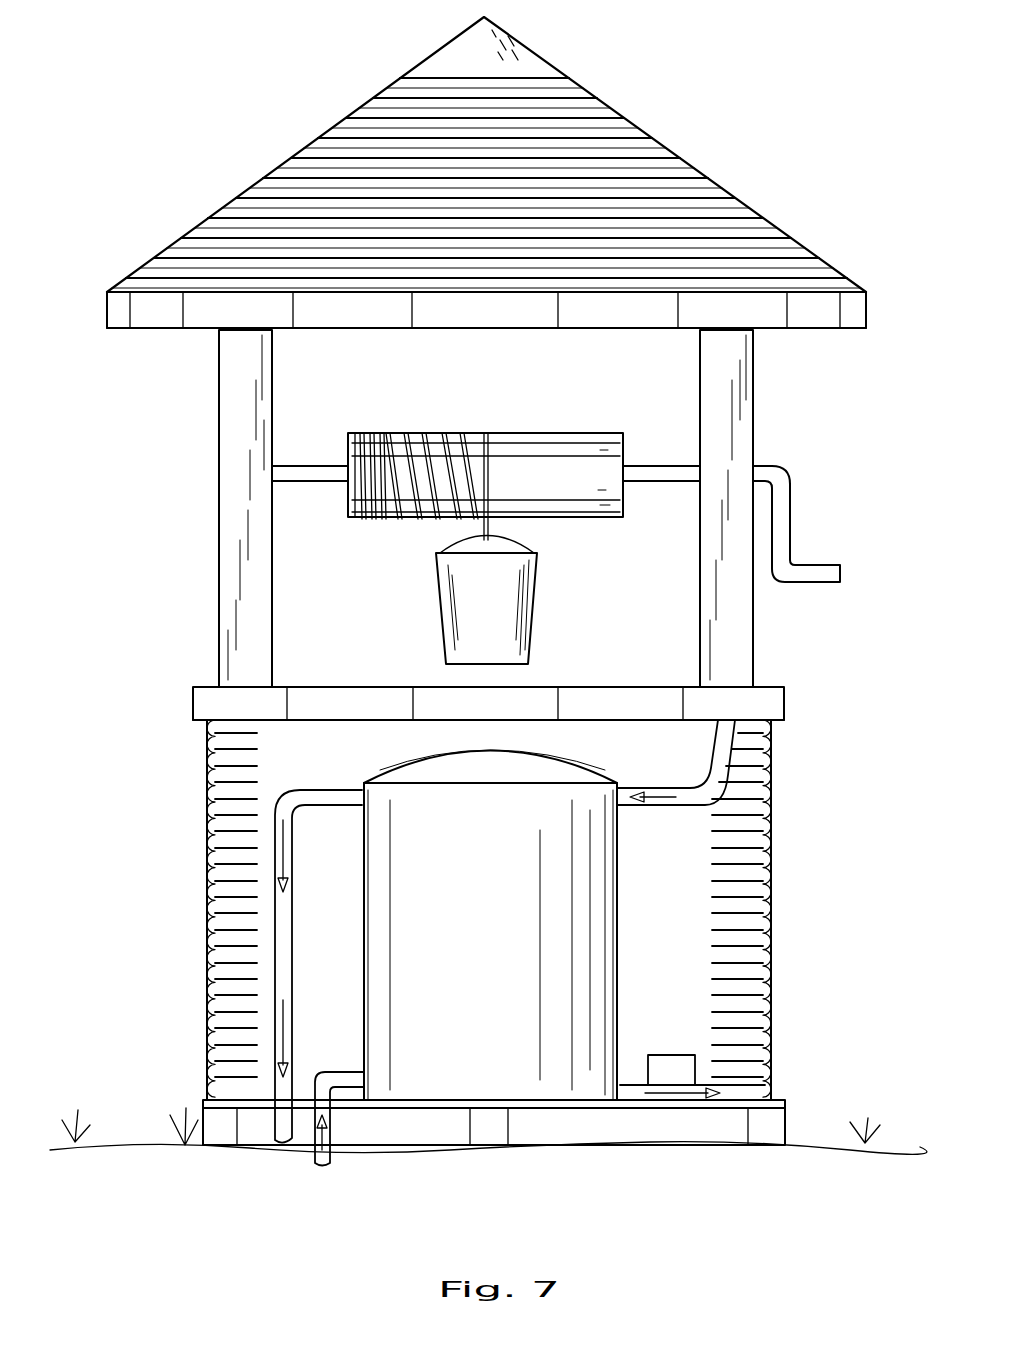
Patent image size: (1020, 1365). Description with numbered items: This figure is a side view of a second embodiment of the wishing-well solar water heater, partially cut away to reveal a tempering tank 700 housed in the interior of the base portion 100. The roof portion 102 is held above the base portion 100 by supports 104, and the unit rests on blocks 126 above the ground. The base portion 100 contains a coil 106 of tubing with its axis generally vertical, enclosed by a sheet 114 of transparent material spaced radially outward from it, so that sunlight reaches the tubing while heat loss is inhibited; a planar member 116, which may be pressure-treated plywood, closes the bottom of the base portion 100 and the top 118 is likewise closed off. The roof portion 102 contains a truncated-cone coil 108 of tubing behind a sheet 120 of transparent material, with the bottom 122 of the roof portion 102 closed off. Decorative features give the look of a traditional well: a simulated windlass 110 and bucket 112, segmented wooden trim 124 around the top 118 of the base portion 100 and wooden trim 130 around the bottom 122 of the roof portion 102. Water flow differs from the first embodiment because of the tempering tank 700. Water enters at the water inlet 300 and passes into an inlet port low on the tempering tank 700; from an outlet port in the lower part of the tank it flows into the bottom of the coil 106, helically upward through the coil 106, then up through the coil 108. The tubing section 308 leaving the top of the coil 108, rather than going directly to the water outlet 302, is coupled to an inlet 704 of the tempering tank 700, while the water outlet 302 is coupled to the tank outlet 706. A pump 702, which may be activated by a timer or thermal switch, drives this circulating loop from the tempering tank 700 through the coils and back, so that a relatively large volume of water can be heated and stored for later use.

The base portion 100 is at (168, 855).
The roof portion 102 is at (348, 80).
The supports 104 is at (232, 398).
The coil 106 is at (745, 838).
The coil 108 is at (655, 152).
The windlass 110 is at (662, 472).
The bucket 112 is at (505, 598).
The sheet of transparent material 114 is at (207, 770).
The planar member 116 is at (773, 1100).
The top of base portion 118 is at (552, 668).
The sheet of transparent material 120 is at (535, 50).
The bottom of roof portion 122 is at (581, 346).
The wooden trim 124 is at (323, 705).
The blocks 126 is at (762, 1122).
The wooden trim 130 is at (493, 322).
The water inlet 300 is at (340, 1150).
The water outlet 302 is at (283, 1122).
The tubing section 308 is at (718, 755).
The tempering tank 700 is at (415, 950).
The pump 702 is at (673, 1072).
The inlet 704 is at (642, 814).
The outlet 706 is at (352, 818).